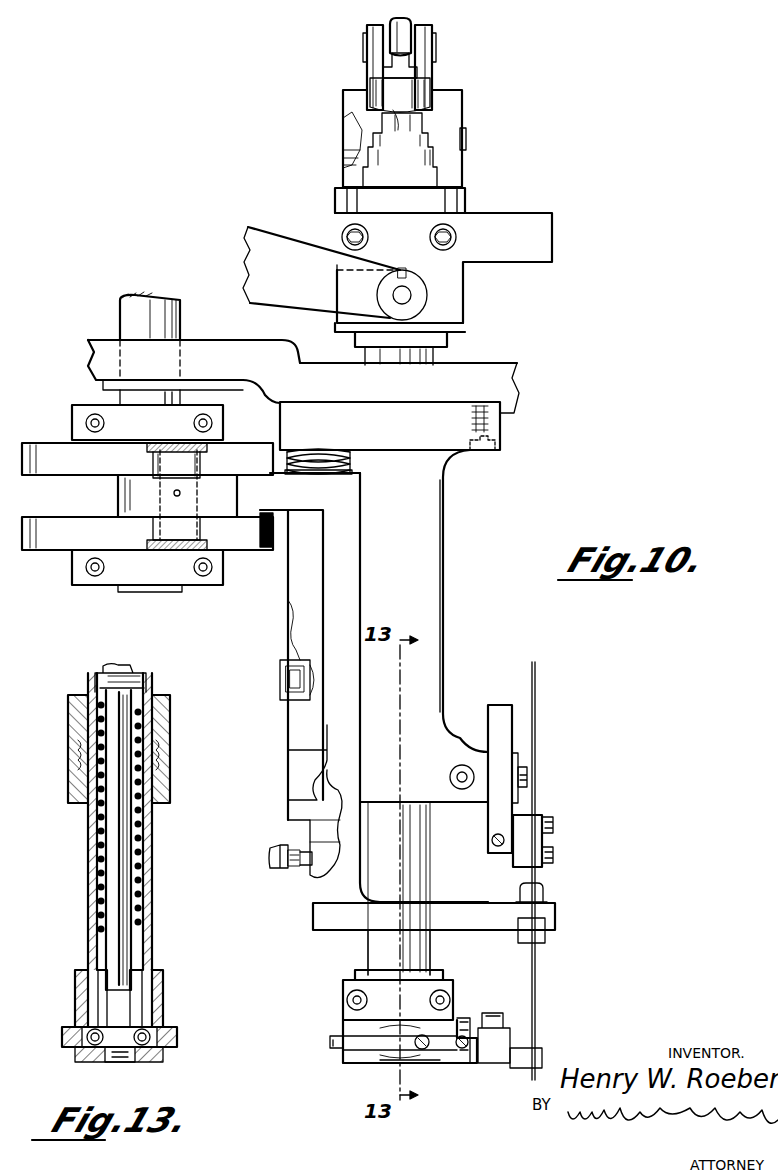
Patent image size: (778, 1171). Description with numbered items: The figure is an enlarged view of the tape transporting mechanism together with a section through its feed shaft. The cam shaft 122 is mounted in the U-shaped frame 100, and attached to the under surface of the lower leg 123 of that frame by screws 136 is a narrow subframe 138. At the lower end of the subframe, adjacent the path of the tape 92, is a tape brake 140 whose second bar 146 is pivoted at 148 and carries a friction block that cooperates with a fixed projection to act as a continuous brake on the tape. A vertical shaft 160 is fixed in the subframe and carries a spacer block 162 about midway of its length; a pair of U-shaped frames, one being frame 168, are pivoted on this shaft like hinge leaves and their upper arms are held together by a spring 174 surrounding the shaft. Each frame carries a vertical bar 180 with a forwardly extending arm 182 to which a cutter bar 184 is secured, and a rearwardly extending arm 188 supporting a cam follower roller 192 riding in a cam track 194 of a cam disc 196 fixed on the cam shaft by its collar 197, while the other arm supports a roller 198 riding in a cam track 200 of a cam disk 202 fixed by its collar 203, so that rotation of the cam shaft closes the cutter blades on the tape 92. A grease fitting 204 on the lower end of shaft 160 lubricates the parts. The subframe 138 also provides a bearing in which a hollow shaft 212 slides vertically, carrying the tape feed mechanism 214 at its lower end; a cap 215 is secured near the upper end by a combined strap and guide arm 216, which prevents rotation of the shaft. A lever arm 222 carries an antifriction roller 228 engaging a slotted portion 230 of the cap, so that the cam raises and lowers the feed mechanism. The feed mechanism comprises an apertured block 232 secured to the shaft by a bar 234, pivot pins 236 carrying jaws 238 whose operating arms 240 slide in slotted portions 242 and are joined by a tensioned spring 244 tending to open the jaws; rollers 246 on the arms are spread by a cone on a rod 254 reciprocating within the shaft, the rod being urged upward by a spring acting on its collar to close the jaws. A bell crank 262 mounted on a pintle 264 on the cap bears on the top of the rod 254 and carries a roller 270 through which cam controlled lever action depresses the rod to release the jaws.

The tape 92 is at (536, 668).
The U-shaped frame 100 is at (502, 432).
The cam shaft 122 is at (130, 315).
The lower leg 123 is at (520, 380).
The screws 136 is at (484, 451).
The subframe 138 is at (446, 536).
The tape brake 140 is at (554, 819).
The second bar 146 is at (496, 722).
The pivot 148 is at (530, 776).
The vertical shaft 160 is at (320, 454).
The spacer block 162 is at (283, 694).
The U-shaped frame 168 is at (290, 590).
The spring 174 is at (305, 476).
The vertical bar 180 is at (327, 725).
The arm 182 is at (466, 916).
The cutter bar 184 is at (547, 932).
The arm 188 is at (230, 528).
The cam follower roller 192 is at (212, 498).
The cam track 194 is at (153, 512).
The cam disc 196 is at (40, 552).
The collar 197 is at (96, 587).
The cam follower roller 198 is at (205, 462).
The cam track 200 is at (152, 464).
The cam disk 202 is at (52, 476).
The collar 203 is at (225, 430).
The grease fitting 204 is at (272, 850).
The hollow shaft 212 is at (420, 367).
The tape feed mechanism 214 is at (440, 1075).
The cap 215 is at (468, 196).
The combined strap and guide arm 216 is at (553, 236).
The lever arm 222 is at (250, 235).
The antifriction roller 228 is at (382, 305).
The slotted portion 230 is at (467, 298).
The apertured block 232 is at (345, 1062).
The bar 234 is at (345, 988).
The pivot pins 236 is at (460, 1020).
The jaws 238 is at (544, 1052).
The operating arms 240 is at (385, 1032).
The slotted portions 242 is at (392, 1062).
The tensioned spring 244 is at (333, 1040).
The rollers 246 is at (420, 1034).
The rod 254 is at (400, 120).
The bell crank 262 is at (455, 95).
The pintle 264 is at (467, 140).
The roller 270 is at (413, 25).